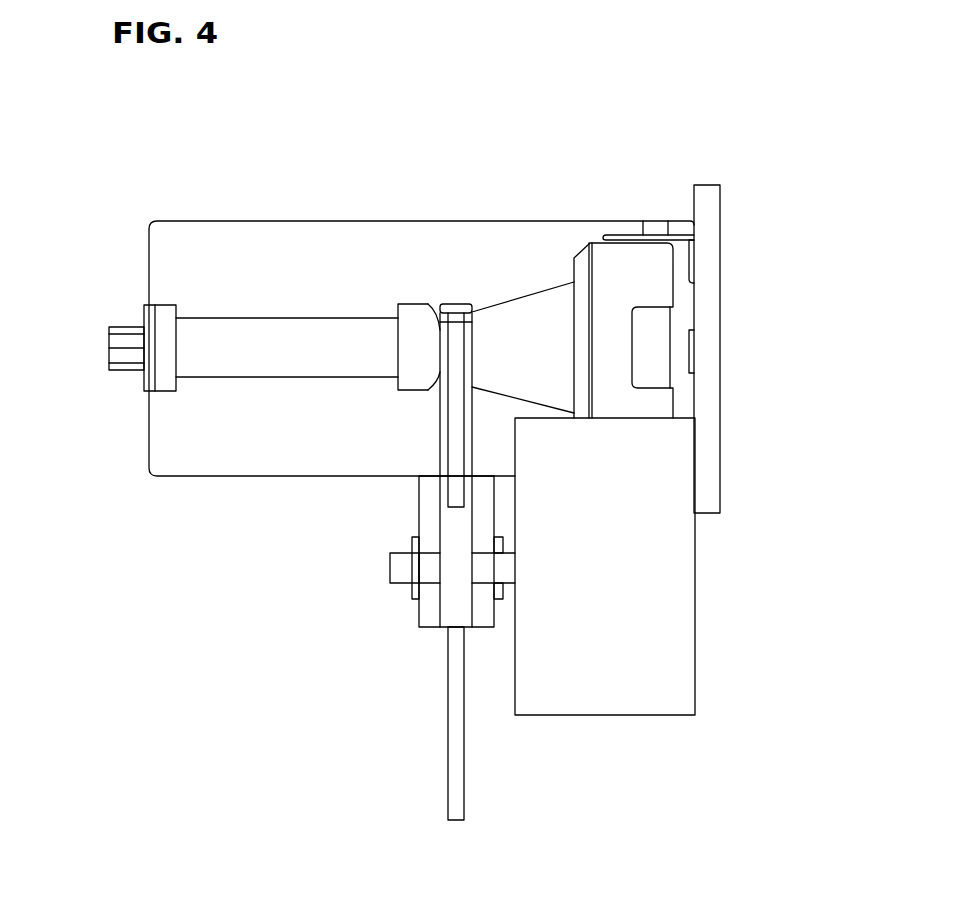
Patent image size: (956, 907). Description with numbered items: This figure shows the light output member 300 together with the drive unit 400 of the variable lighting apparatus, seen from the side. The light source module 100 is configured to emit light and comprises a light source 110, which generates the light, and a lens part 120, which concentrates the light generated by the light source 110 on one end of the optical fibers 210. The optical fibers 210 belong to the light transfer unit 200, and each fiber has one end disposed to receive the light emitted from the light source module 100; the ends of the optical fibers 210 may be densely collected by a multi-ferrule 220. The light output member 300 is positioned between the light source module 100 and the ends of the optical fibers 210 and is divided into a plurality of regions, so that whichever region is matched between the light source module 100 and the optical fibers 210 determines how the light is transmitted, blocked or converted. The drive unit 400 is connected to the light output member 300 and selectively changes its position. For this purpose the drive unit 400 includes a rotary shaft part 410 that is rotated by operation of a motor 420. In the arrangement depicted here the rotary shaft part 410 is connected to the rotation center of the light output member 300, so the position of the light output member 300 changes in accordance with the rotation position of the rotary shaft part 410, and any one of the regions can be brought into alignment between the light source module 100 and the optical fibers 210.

The light source module 100 is at (629, 232).
The light source 110 is at (697, 350).
The lens part 120 is at (522, 337).
The light transfer unit 200 is at (172, 298).
The optical fibers 210 is at (129, 355).
The multi-ferrule 220 is at (317, 347).
The light output member 300 is at (444, 765).
The drive unit 400 is at (704, 574).
The rotary shaft part 410 is at (497, 568).
The motor 420 is at (655, 655).